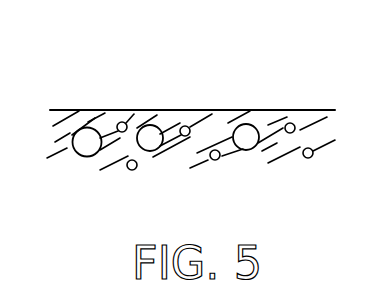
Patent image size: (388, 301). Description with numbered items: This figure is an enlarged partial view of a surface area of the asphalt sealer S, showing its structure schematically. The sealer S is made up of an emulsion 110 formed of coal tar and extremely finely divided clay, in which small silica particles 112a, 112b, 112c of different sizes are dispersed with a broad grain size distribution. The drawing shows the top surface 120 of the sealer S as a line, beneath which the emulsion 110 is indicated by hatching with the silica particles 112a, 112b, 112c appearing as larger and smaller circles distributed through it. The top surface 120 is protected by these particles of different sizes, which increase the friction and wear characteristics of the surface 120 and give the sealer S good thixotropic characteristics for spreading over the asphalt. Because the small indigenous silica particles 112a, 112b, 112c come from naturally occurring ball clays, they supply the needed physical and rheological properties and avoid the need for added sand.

The sealer S is at (268, 110).
The emulsion 110 is at (173, 110).
The top surface 120 is at (117, 110).
The silica particle 112a is at (87, 142).
The silica particle 112b is at (135, 170).
The silica particle 112c is at (247, 143).